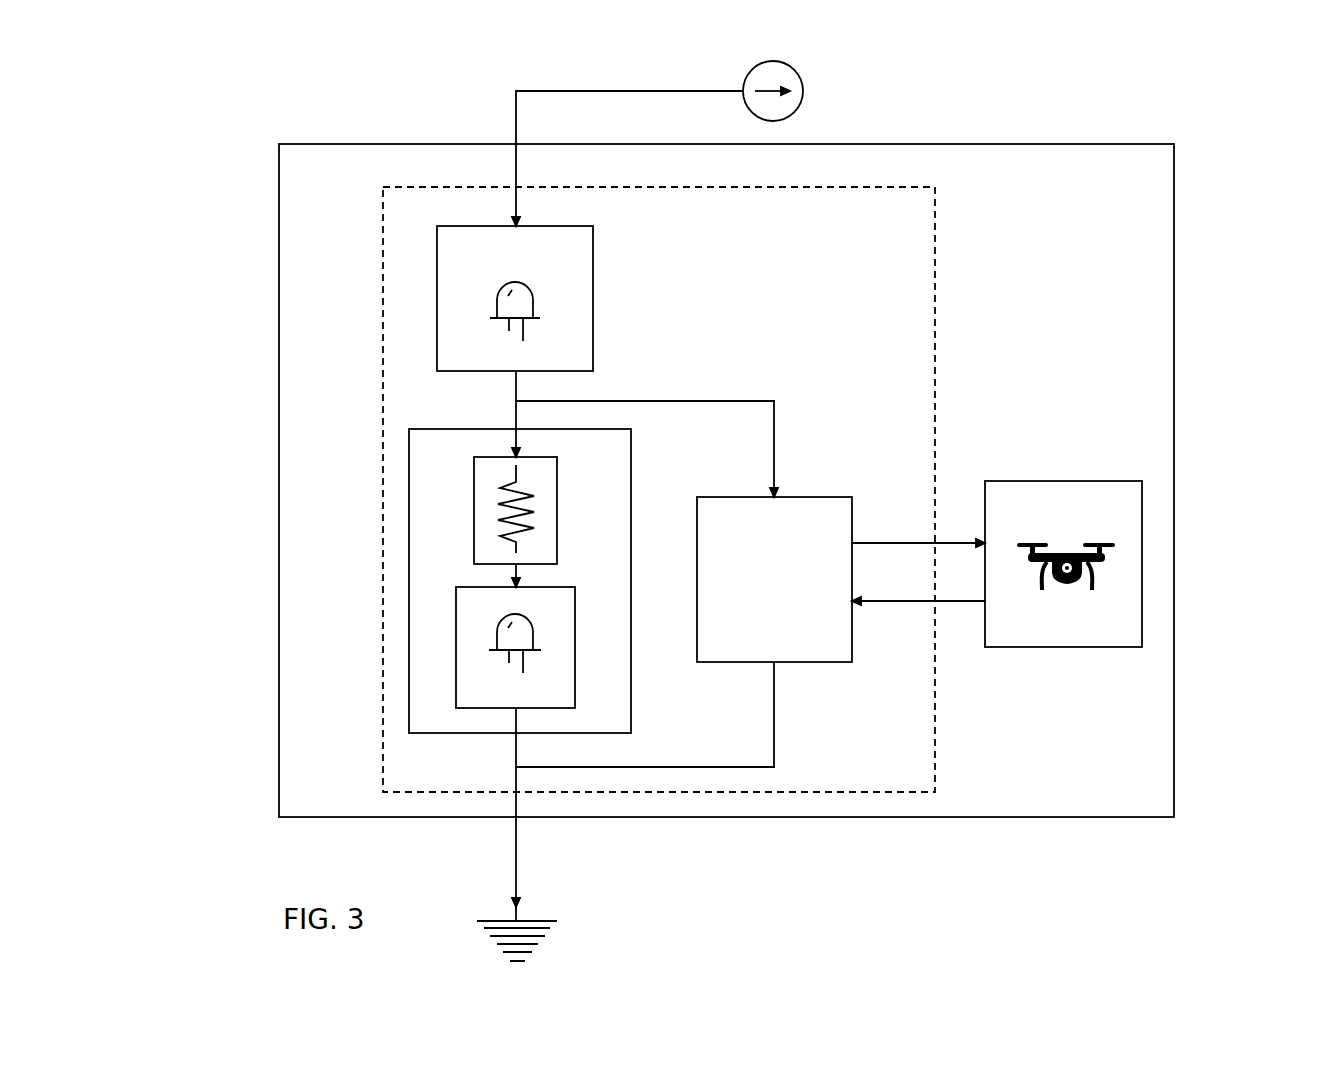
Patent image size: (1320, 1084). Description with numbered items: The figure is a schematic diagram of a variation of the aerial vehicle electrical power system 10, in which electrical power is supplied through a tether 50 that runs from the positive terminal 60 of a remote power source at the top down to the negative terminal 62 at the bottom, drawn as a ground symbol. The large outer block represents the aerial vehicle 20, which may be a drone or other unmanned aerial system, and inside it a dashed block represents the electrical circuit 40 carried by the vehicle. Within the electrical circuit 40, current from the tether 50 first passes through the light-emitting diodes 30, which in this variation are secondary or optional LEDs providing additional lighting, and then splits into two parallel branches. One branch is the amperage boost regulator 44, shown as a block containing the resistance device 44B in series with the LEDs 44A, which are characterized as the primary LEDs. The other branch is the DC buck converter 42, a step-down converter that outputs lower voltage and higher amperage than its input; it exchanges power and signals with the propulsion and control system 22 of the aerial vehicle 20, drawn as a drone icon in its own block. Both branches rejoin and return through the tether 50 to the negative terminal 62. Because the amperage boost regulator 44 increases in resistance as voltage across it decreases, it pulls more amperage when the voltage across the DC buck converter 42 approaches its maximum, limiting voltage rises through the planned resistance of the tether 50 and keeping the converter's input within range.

The aerial vehicle electrical power system 10 is at (701, 502).
The aerial vehicle 20 is at (1174, 370).
The propulsion and control system 22 is at (1025, 481).
The light-emitting diodes 30 is at (593, 303).
The electrical circuit 40 is at (383, 311).
The DC buck converter 42 is at (799, 497).
The amperage boost regulator 44 is at (409, 580).
The LEDs 44A is at (456, 656).
The resistance device 44B is at (474, 513).
The tether 50 is at (620, 91).
The positive terminal 60 is at (802, 84).
The negative terminal 62 is at (545, 936).